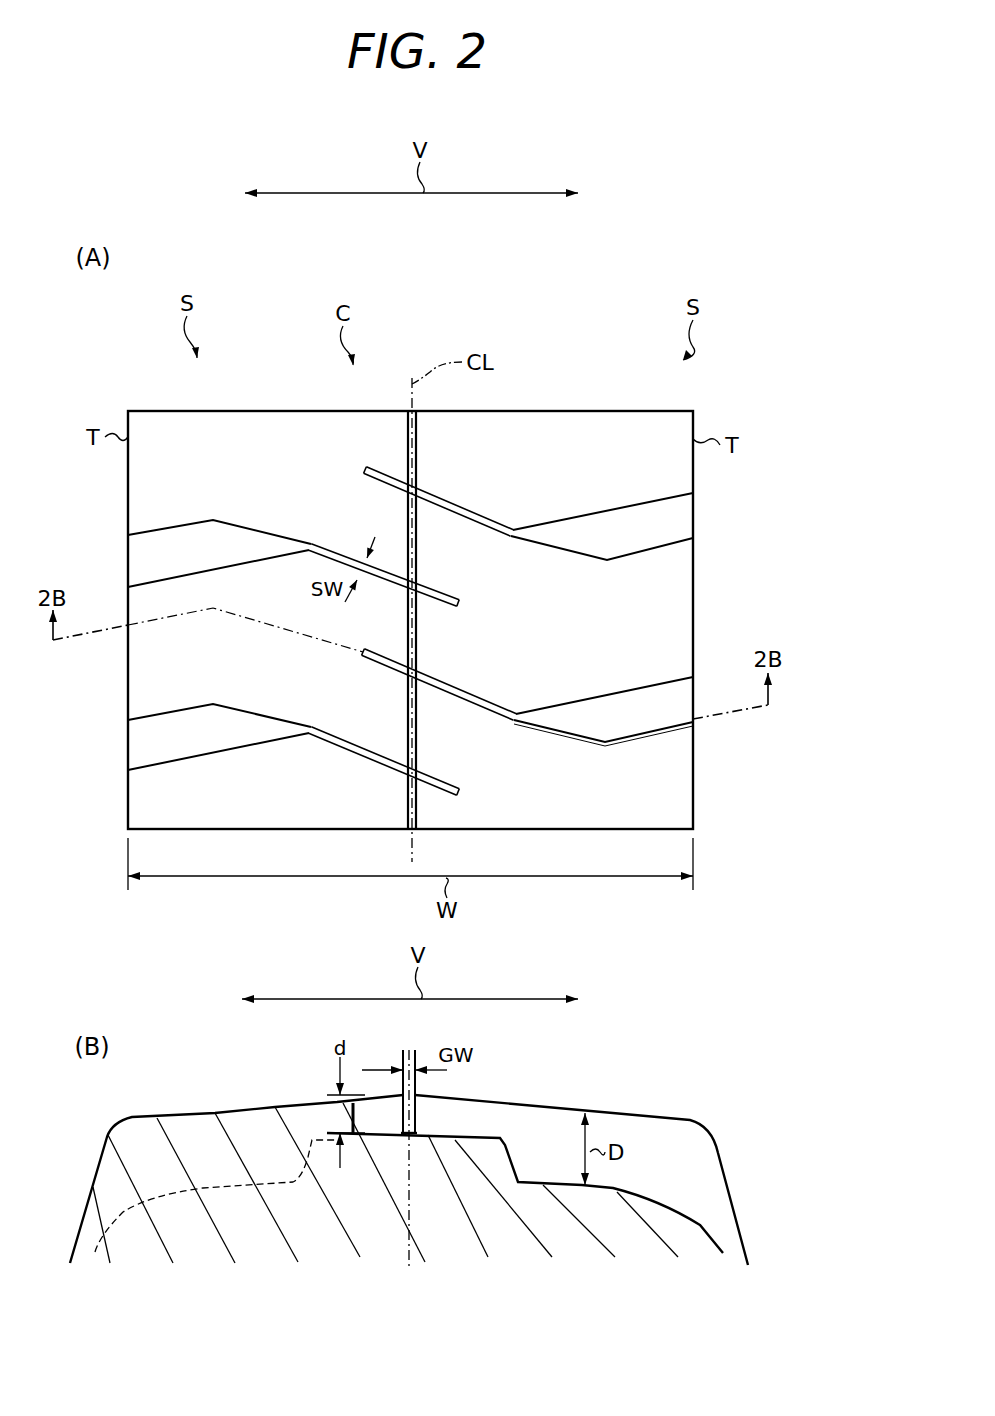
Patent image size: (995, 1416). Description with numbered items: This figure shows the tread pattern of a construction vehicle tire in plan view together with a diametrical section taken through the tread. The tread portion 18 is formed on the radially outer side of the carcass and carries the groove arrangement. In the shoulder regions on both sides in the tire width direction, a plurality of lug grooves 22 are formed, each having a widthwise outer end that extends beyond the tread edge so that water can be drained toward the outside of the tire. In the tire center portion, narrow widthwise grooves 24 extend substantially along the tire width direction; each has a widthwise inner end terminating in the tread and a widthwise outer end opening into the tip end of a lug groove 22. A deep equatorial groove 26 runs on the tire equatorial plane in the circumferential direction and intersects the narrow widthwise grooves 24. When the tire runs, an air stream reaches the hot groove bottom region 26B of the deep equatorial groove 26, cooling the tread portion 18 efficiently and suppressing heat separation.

The tread portion 18 is at (565, 278).
The lug groove 22 is at (147, 558).
The narrow widthwise groove 24 is at (466, 508).
The deep equatorial groove 26 is at (417, 411).
The groove bottom region 26B is at (415, 1132).